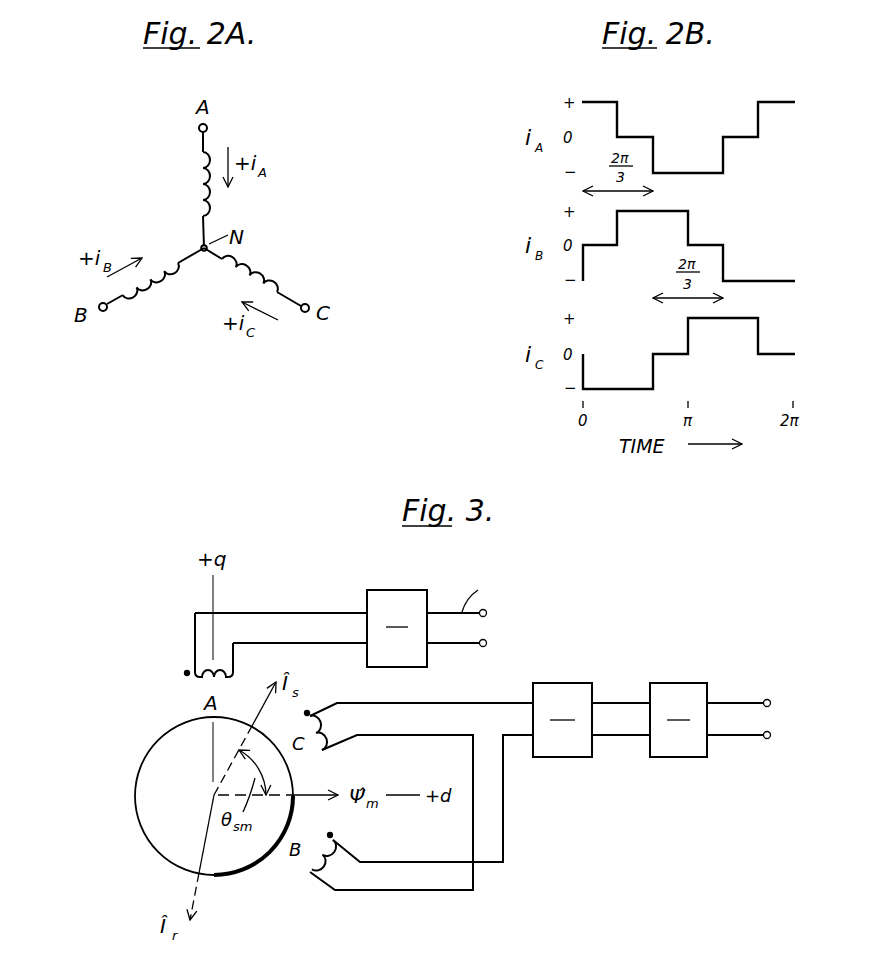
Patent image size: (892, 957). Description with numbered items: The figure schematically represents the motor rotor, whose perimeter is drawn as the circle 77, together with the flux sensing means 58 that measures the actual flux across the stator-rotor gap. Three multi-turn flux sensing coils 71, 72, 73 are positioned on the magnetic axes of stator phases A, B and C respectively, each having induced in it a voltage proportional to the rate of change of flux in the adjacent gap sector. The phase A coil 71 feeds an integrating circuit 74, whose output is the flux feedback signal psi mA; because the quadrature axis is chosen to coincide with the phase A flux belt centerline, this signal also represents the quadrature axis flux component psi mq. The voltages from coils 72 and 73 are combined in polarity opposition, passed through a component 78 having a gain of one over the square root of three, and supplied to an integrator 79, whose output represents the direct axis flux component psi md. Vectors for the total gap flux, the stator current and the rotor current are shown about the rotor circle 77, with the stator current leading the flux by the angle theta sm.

The flux sensing coil 71 is at (195, 680).
The flux sensing coil 72 is at (309, 870).
The flux sensing coil 73 is at (325, 727).
The integrating circuit 74 is at (398, 588).
The circle representing the perimeter of the motor rotor 77 is at (142, 766).
The component having a gain of 1/sqrt(3) 78 is at (567, 680).
The integrator 79 is at (680, 680).
The flux sensing means 58 is at (569, 881).